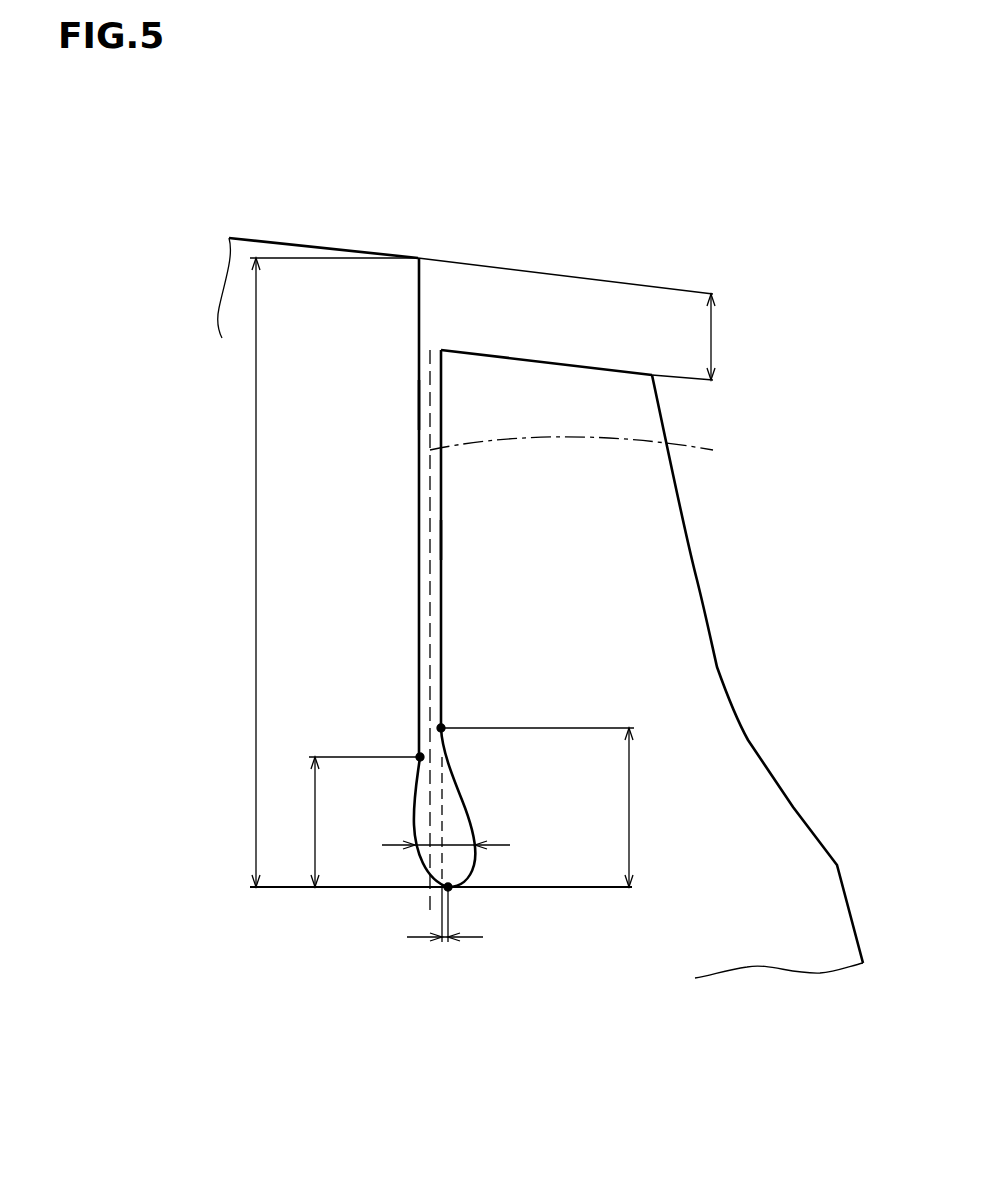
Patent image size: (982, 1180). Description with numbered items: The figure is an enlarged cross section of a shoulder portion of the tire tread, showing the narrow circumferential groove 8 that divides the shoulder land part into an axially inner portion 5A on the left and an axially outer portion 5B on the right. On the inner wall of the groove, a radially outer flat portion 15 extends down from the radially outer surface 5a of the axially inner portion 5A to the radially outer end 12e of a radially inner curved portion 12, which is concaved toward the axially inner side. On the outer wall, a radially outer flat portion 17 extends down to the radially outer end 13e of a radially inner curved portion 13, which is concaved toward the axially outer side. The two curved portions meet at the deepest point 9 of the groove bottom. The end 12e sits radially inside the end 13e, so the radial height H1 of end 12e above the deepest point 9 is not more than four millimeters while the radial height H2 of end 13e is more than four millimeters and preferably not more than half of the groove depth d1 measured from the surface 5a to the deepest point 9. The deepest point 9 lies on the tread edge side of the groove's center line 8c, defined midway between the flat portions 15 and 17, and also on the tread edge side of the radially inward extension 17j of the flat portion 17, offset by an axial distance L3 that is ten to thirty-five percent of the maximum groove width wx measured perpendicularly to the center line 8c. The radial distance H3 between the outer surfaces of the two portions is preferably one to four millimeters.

The axially inner portion 5A is at (294, 442).
The axially outer portion 5B is at (649, 664).
The radially outer surface of the axially inner portion 5a is at (287, 242).
The narrow circumferential groove 8 is at (432, 340).
The center line of the narrow circumferential groove 8c is at (589, 452).
The deepest point 9 is at (448, 887).
The radially inner curved portion 12 is at (416, 790).
The radially outer end of the radially inner curved portion 12e is at (420, 757).
The radially inner curved portion 13 is at (447, 772).
The radially outer end of the radially inner curved portion 13e is at (441, 728).
The radially outer flat portion 15 is at (418, 388).
The radially outer flat portion 17 is at (441, 528).
The radially inward extension 17j is at (444, 805).
The groove depth d1 is at (424, 572).
The radial height H1 is at (347, 822).
The radial height H2 is at (557, 807).
The radial distance H3 is at (586, 319).
The axial distance L3 is at (445, 929).
The maximum width wx is at (457, 847).